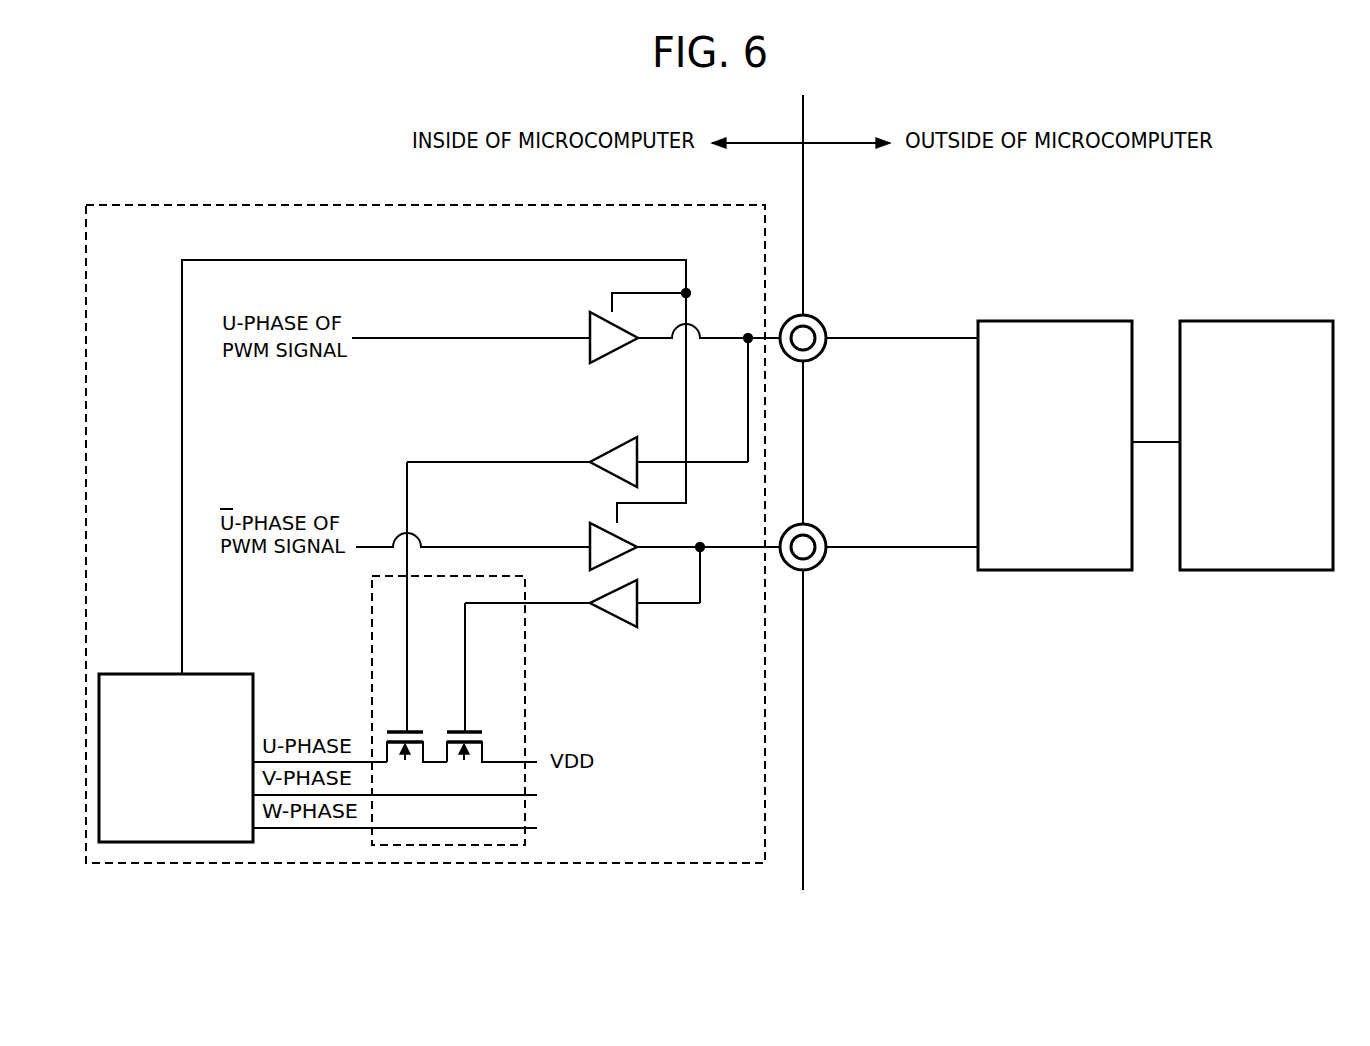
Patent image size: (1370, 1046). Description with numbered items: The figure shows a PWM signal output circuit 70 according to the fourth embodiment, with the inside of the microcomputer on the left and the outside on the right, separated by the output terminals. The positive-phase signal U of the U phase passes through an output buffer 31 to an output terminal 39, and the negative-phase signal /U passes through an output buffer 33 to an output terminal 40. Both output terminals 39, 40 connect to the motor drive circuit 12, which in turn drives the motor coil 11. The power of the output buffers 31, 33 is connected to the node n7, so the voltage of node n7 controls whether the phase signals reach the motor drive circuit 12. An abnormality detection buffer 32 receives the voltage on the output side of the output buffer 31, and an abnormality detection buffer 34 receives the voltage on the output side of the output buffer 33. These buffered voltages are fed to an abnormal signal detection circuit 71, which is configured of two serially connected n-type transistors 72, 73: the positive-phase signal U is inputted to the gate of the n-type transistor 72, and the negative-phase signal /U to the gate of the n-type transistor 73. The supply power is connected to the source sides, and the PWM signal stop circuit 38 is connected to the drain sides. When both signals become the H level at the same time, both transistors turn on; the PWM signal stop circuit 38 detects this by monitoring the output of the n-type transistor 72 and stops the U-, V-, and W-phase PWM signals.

The motor coil 11 is at (1270, 321).
The motor drive circuit 12 is at (1058, 321).
The output buffer 31 is at (620, 356).
The abnormality detection buffer 32 is at (612, 447).
The output buffer 33 is at (594, 522).
The abnormality detection buffer 34 is at (637, 610).
The PWM signal stop circuit 38 is at (200, 674).
The output terminal 39 is at (820, 317).
The output terminal 40 is at (820, 527).
The PWM signal output circuit 70 is at (490, 865).
The abnormal signal detection circuit 71 is at (371, 612).
The n-type transistor 72 is at (385, 745).
The n-type transistor 73 is at (483, 745).
The node n7 is at (688, 292).